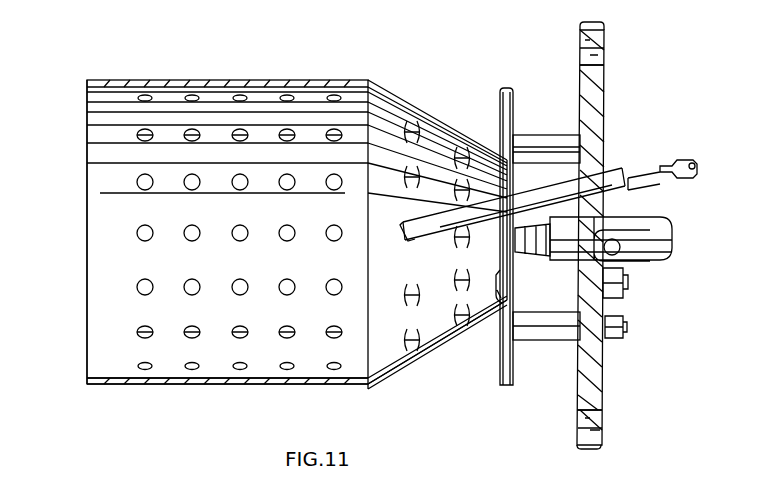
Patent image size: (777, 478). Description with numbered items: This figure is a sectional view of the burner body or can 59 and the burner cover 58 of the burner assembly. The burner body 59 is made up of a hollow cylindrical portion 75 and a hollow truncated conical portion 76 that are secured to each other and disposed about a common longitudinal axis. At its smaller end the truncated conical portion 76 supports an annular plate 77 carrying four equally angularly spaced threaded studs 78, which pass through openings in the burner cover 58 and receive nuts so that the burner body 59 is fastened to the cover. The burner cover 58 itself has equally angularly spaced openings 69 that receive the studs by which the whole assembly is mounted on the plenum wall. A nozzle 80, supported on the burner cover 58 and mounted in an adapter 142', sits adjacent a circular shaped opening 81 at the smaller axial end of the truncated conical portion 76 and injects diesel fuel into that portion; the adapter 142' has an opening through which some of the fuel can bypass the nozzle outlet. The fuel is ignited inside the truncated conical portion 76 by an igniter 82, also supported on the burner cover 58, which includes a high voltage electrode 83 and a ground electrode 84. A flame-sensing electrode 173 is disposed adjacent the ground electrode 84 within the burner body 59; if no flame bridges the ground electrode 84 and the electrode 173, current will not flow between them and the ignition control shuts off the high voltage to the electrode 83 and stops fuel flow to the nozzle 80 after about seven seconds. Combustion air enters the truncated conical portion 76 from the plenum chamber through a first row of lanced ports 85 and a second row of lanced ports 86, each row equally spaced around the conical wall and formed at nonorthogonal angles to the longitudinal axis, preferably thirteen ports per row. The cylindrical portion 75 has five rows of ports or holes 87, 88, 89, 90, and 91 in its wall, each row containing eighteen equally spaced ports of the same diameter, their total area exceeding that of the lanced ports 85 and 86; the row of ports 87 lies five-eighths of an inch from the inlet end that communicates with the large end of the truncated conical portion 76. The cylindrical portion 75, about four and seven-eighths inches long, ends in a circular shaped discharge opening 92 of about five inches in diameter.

The burner body or can 59 is at (118, 78).
The hollow cylindrical portion 75 is at (116, 385).
The circular shaped discharge opening 92 is at (88, 380).
The igniter 82 is at (411, 263).
The second row of lanced ports 86 is at (413, 120).
The first row of lanced ports 85 is at (462, 147).
The high voltage electrode 83 is at (460, 245).
The ground electrode 84 is at (428, 218).
The electrode 173 is at (483, 205).
The annular plate 77 is at (500, 360).
The hollow truncated conical portion 76 is at (428, 380).
The threaded studs 78 is at (552, 342).
The circular shaped opening 81 is at (506, 296).
The nozzle 80 is at (548, 262).
The adapter 142' is at (644, 229).
The burner cover 58 is at (609, 98).
The equally angularly spaced openings 69 is at (606, 55).
The row of ports or holes 91 is at (143, 279).
The row of ports or holes 90 is at (190, 279).
The row of ports or holes 89 is at (240, 279).
The row of ports or holes 88 is at (288, 279).
The row of ports or holes 87 is at (338, 279).